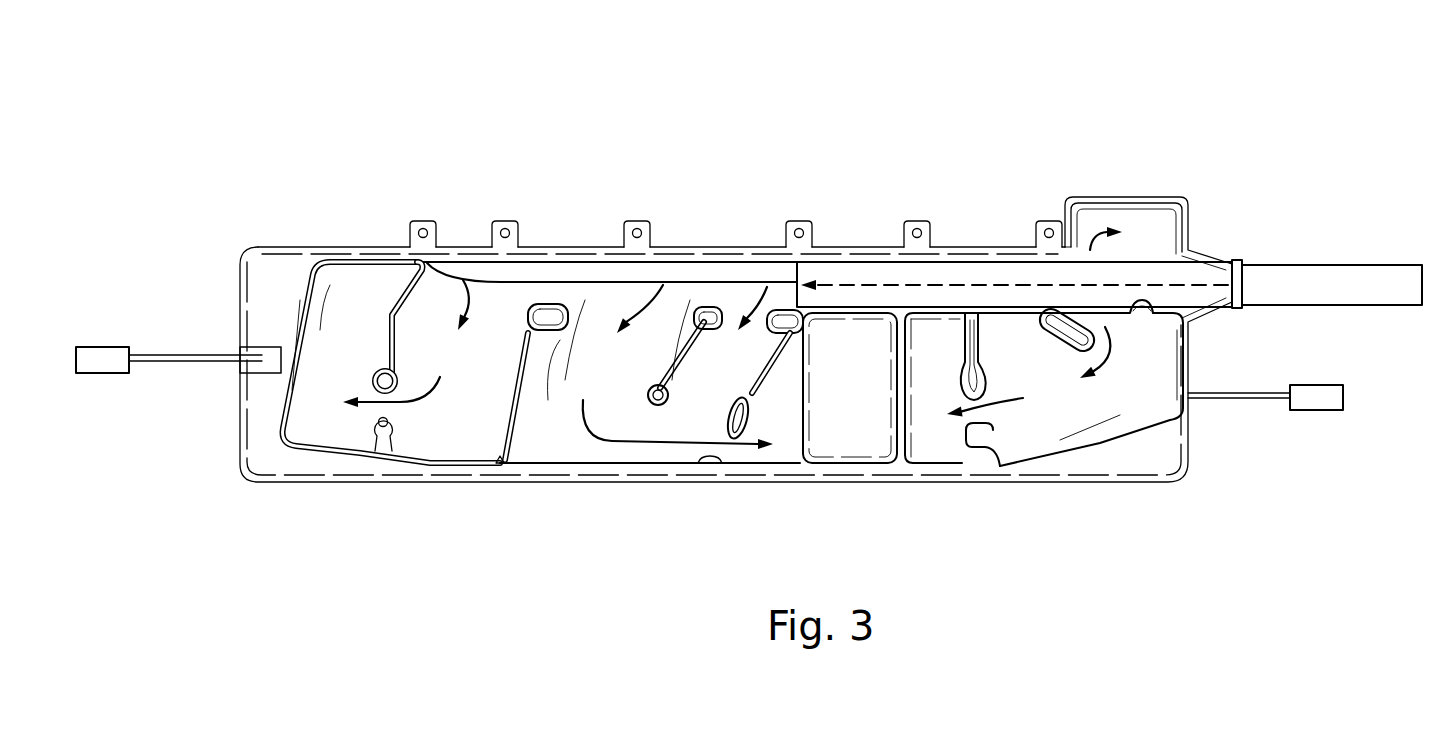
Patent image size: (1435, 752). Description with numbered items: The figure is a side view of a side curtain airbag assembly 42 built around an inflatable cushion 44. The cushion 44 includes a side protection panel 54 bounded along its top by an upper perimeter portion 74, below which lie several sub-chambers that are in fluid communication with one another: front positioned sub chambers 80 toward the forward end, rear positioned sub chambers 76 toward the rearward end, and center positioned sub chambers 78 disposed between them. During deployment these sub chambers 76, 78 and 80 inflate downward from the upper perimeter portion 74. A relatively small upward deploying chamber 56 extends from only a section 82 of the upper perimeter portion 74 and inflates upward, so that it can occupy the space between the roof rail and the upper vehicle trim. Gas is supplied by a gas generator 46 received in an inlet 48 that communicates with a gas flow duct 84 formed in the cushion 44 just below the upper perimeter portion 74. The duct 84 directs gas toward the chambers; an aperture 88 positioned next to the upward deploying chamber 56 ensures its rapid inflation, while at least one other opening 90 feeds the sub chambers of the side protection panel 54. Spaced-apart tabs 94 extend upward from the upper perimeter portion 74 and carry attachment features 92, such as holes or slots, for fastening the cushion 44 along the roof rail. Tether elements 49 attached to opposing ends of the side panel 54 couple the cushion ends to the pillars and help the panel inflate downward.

The side curtain airbag assembly 42 is at (1330, 105).
The inflatable cushion 44 is at (1128, 140).
The gas generator 46 is at (1320, 272).
The inlet 48 is at (1234, 262).
The tether elements 49 is at (88, 358).
The side protection panel 54 is at (232, 195).
The upward deploying chamber 56 is at (1127, 217).
The upper perimeter portion 74 is at (765, 257).
The rear positioned sub chambers 76 is at (930, 452).
The center positioned sub chambers 78 is at (807, 450).
The front positioned sub chambers 80 is at (336, 417).
The section of the upper perimeter portion 82 is at (1083, 247).
The gas flow duct 84 is at (877, 273).
The aperture 88 is at (1137, 302).
The opening 90 is at (753, 260).
The attachment features 92 is at (424, 229).
The tabs 94 is at (410, 237).